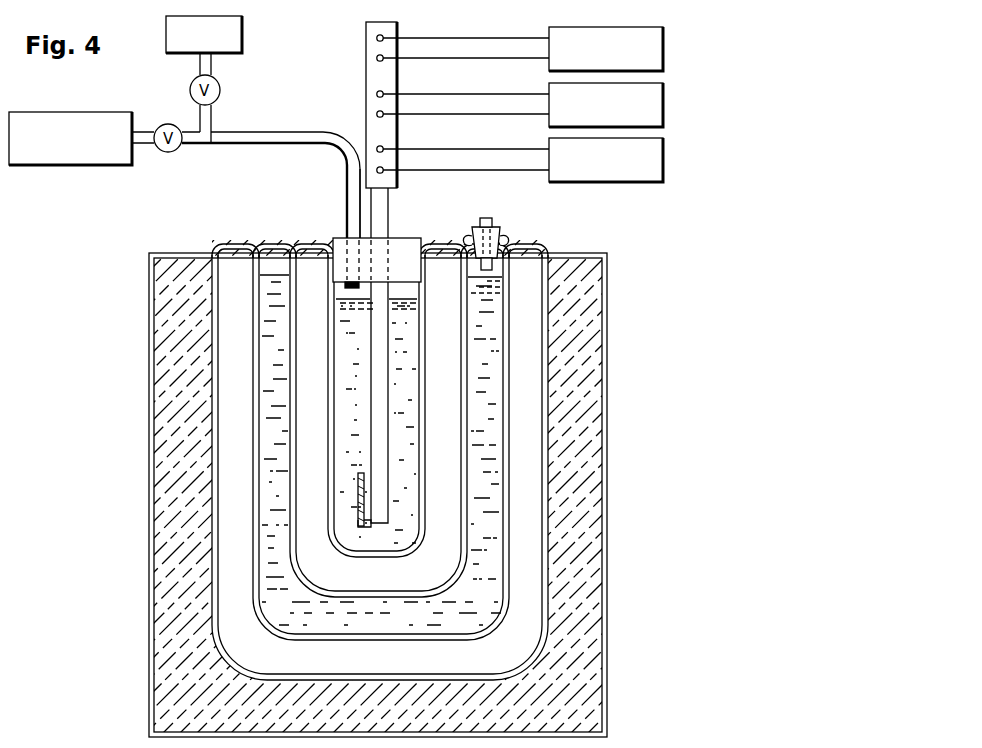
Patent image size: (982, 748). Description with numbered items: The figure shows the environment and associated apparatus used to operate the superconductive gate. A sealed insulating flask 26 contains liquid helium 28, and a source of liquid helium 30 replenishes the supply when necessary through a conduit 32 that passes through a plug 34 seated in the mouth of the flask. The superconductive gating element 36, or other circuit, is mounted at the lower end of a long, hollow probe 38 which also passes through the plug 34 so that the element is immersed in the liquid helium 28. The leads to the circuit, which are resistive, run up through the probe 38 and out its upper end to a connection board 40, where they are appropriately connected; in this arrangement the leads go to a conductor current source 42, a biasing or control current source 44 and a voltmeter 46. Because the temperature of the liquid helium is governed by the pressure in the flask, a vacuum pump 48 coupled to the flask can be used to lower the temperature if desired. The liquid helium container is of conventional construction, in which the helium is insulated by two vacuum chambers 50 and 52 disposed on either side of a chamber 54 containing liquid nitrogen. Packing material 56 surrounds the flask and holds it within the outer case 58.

The sealed insulating flask 26 is at (331, 331).
The liquid helium 28 is at (414, 453).
The source of liquid helium 30 is at (70, 151).
The conduit 32 is at (341, 201).
The plug 34 is at (405, 238).
The superconductive gating element 36 is at (357, 508).
The hollow probe 38 is at (384, 206).
The connection board 40 is at (457, 94).
The conductor current source 42 is at (606, 49).
The biasing or control current source 44 is at (606, 105).
The voltmeter 46 is at (606, 160).
The vacuum pump 48 is at (219, 34).
The vacuum chamber 50 is at (456, 373).
The vacuum chamber 52 is at (538, 373).
The chamber containing liquid nitrogen 54 is at (505, 237).
The packing material 56 is at (597, 350).
The outer case 58 is at (606, 370).